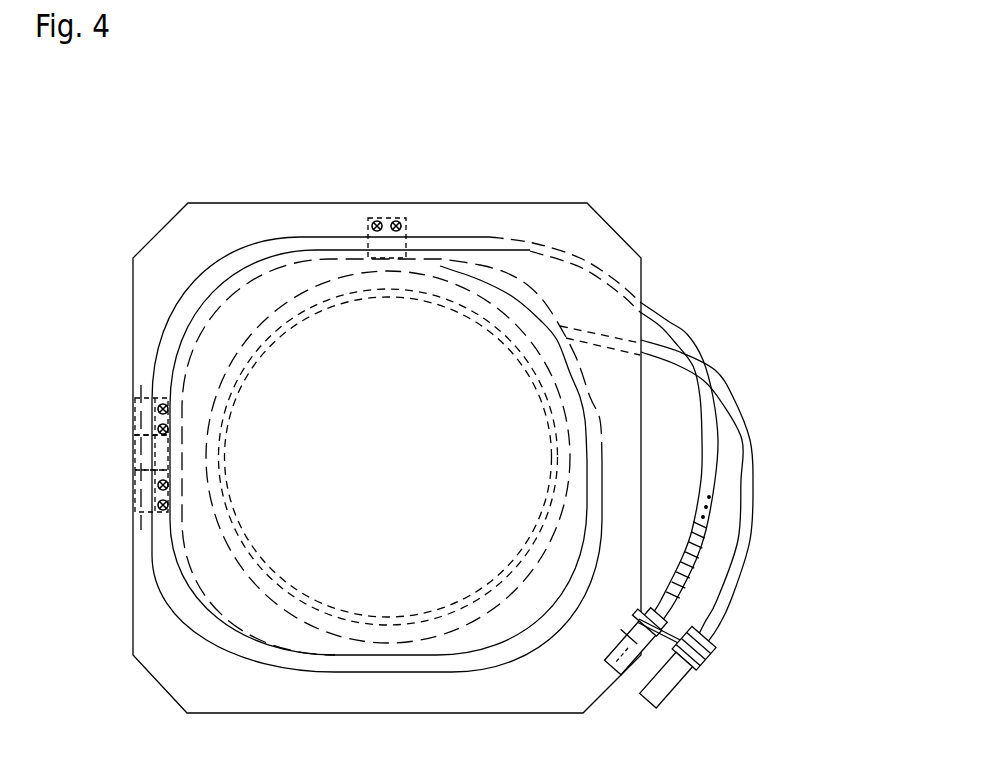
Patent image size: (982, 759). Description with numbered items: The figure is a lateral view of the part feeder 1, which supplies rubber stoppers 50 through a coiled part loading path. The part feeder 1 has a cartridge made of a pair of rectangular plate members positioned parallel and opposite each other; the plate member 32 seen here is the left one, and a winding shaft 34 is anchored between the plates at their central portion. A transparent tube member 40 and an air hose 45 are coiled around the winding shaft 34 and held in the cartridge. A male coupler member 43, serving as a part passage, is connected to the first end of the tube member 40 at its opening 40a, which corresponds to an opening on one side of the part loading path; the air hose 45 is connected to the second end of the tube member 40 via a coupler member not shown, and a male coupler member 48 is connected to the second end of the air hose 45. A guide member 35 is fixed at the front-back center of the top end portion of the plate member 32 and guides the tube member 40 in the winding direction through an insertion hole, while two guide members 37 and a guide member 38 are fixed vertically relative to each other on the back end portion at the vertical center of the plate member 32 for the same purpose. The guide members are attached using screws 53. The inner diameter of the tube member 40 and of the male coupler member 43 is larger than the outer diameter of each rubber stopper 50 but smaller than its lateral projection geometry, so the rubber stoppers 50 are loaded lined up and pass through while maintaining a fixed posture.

The part feeder 1 is at (608, 138).
The plate member 32 is at (226, 217).
The winding shaft 34 is at (341, 305).
The guide member 35 is at (388, 218).
The guide member 37 is at (140, 397).
The guide member 38 is at (140, 470).
The screw 53 is at (158, 429).
The tube member 40 is at (681, 328).
The opening 40a is at (608, 650).
The air hose 45 is at (757, 487).
The rubber stopper 50 is at (683, 588).
The male coupler member 43 is at (616, 672).
The male coupler member 48 is at (670, 693).